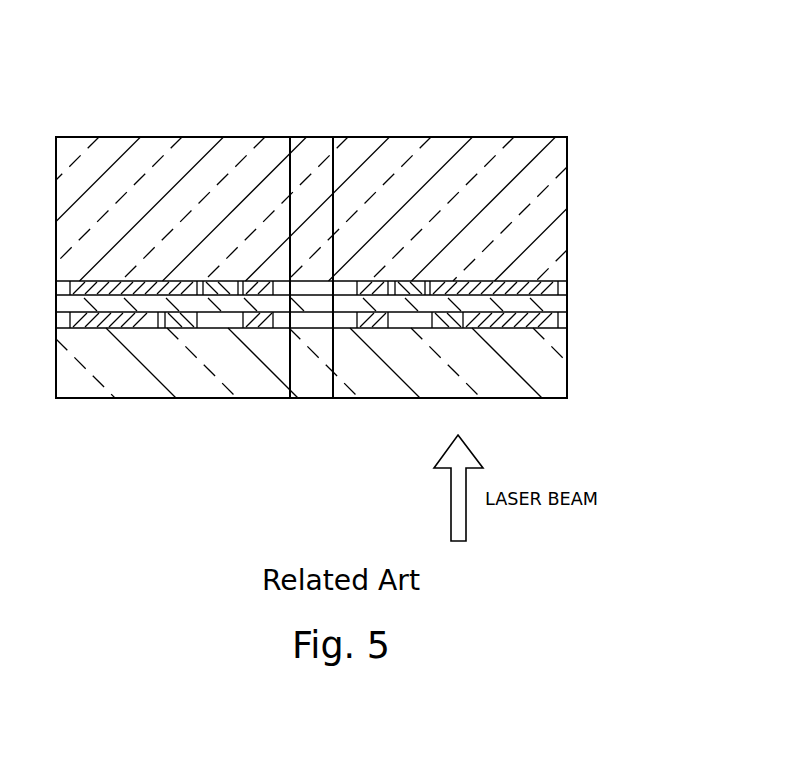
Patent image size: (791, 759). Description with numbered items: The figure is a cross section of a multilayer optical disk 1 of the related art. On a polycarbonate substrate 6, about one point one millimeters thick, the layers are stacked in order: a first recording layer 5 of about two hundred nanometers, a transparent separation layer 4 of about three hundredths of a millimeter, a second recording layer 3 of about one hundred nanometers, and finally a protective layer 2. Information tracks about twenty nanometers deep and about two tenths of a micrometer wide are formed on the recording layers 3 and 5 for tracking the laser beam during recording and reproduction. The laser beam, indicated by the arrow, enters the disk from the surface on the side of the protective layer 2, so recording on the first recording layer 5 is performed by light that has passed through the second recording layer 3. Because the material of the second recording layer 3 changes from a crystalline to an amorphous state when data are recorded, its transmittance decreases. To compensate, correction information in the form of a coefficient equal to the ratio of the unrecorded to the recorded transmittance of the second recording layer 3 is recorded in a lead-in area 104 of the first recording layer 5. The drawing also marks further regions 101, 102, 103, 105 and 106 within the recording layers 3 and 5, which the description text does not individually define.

The multilayer optical disk 1 is at (488, 107).
The protective layer 2 is at (563, 356).
The second recording layer 3 is at (568, 322).
The transparent separation layer 4 is at (568, 303).
The first recording layer 5 is at (568, 287).
The polycarbonate substrate 6 is at (562, 212).
The first electrode portion 101 is at (258, 322).
The second electrode portion 102 is at (180, 323).
The third electrode portion 103 is at (115, 323).
The lead-in area 104 is at (255, 283).
The fifth electrode portion 105 is at (216, 285).
The sixth electrode portion 106 is at (140, 287).